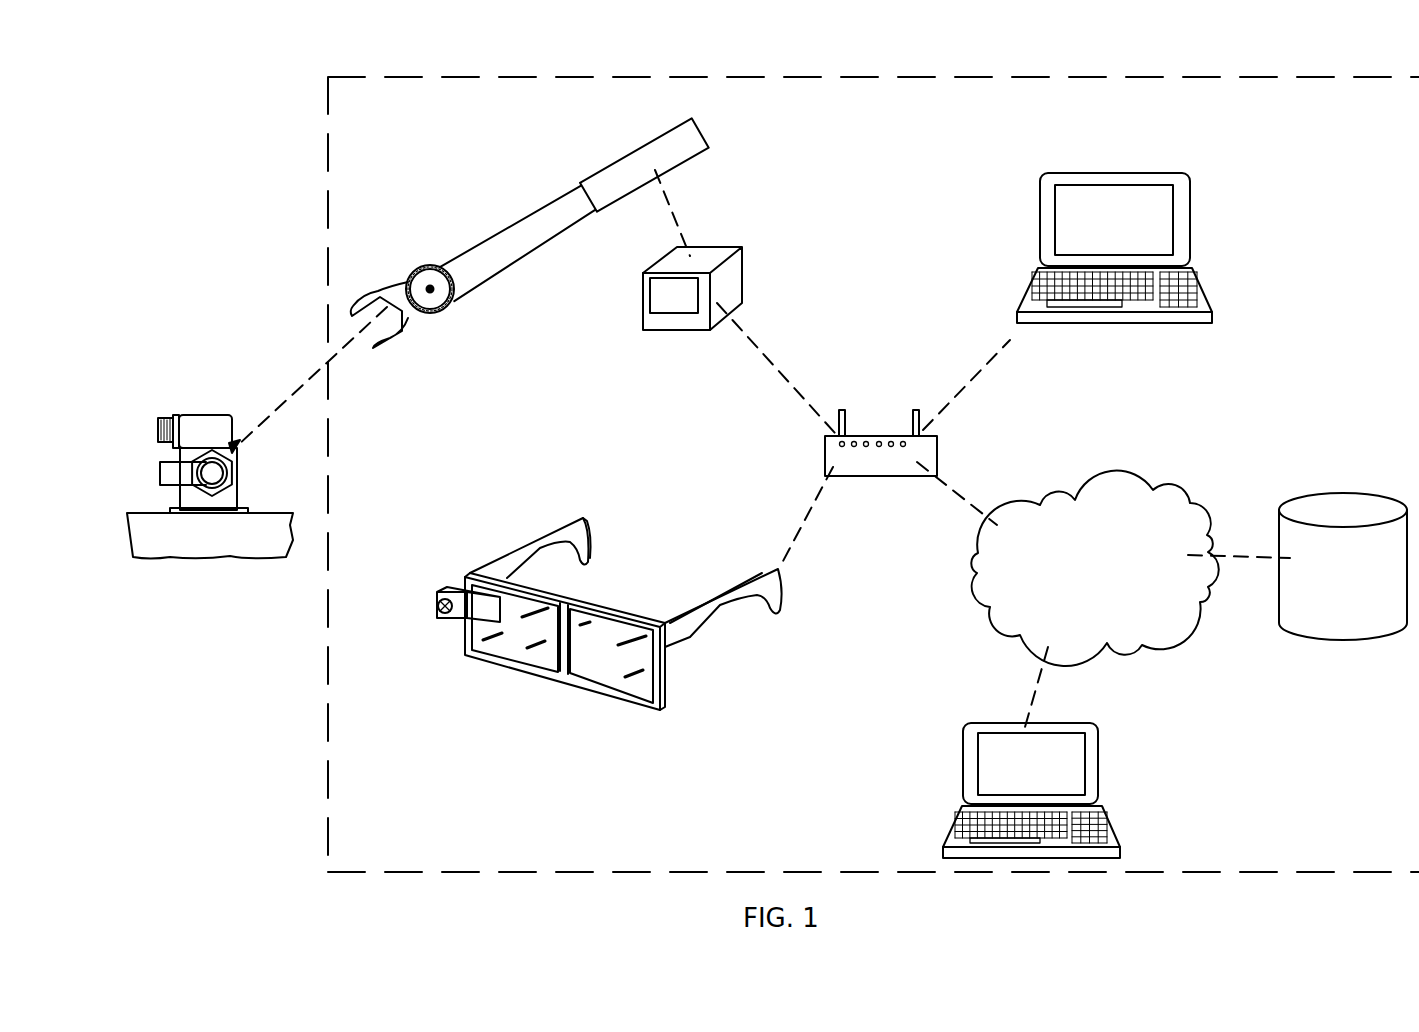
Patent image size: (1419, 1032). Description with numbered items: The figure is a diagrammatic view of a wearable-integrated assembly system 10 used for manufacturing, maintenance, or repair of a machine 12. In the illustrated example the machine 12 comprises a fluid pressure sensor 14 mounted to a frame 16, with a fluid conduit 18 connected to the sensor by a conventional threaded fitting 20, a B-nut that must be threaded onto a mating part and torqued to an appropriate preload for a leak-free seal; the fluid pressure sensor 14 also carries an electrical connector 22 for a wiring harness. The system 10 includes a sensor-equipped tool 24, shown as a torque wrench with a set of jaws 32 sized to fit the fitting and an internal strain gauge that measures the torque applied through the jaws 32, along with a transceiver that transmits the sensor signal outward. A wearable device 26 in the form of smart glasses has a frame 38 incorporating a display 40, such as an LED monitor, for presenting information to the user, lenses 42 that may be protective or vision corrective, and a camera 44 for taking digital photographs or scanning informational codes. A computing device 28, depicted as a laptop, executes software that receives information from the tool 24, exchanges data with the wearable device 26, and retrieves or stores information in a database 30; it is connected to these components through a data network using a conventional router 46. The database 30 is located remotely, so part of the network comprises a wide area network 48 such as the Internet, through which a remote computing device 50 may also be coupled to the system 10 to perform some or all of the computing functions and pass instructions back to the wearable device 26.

The wearable-integrated assembly system 10 is at (892, 70).
The machine 12 is at (198, 467).
The fluid pressure sensor 14 is at (190, 415).
The frame 16 is at (212, 548).
The fluid conduit 18 is at (160, 473).
The threaded fitting 20 is at (233, 473).
The electrical connector 22 is at (160, 420).
The sensor-equipped tool 24 is at (530, 255).
The wearable device 26 is at (582, 616).
The computing device 28 is at (1126, 236).
The database 30 is at (1356, 596).
The jaws 32 is at (393, 340).
The frame 38 is at (663, 660).
The display 40 is at (480, 605).
The lenses 42 is at (615, 670).
The camera 44 is at (437, 606).
The router 46 is at (720, 252).
The wide area network 48 is at (1104, 596).
The remote computing device 50 is at (1046, 776).